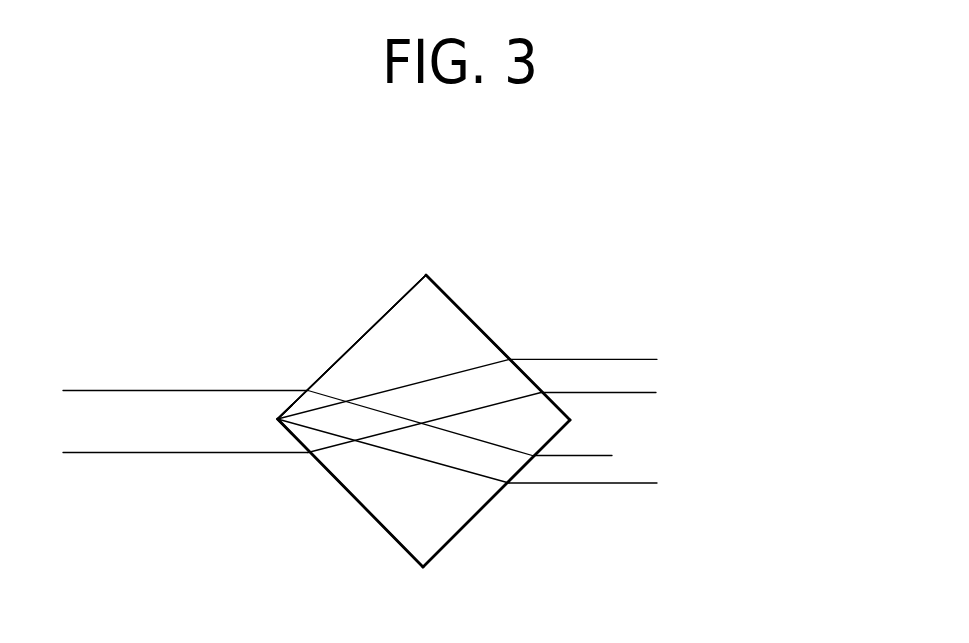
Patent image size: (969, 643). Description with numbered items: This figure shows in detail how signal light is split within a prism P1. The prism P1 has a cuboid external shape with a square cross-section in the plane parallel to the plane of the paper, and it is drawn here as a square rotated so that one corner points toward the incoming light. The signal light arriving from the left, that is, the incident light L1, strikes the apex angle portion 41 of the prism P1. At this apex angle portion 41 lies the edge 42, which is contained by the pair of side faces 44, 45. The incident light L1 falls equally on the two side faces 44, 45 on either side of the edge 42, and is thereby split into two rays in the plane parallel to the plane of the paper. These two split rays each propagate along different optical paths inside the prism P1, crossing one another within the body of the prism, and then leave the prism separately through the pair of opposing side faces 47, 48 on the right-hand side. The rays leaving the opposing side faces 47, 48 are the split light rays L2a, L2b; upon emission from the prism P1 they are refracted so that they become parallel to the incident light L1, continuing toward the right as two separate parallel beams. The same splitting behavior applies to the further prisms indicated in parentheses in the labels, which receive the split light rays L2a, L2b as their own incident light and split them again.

The apex angle portion 41 is at (307, 403).
The edge 42 is at (277, 419).
The side face 44 is at (368, 328).
The side face 45 is at (365, 512).
The opposing side face 47 is at (480, 515).
The opposing side face 48 is at (485, 328).
The prism P1 is at (778, 201).
The incident light L1 is at (177, 388).
The split light ray L2a is at (585, 358).
The split light ray L2b is at (582, 487).